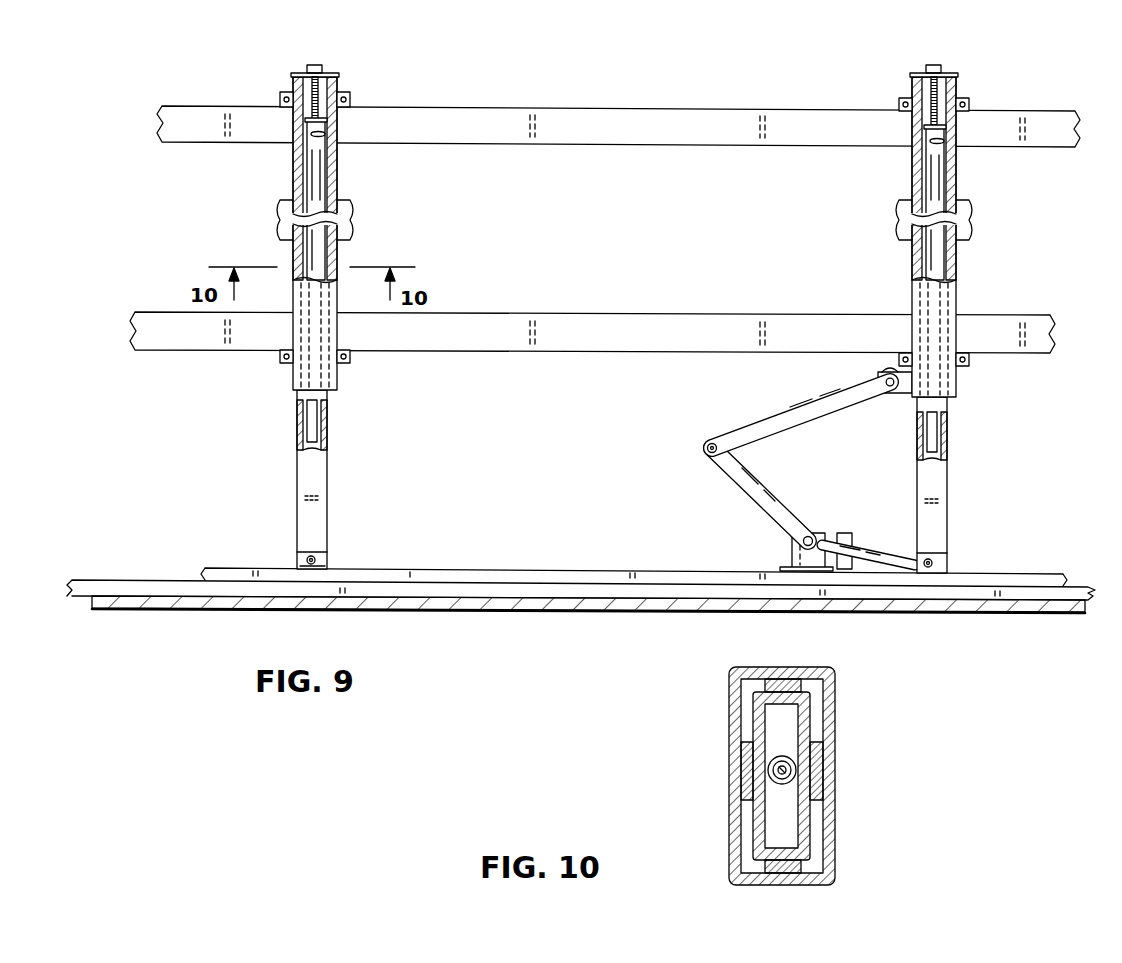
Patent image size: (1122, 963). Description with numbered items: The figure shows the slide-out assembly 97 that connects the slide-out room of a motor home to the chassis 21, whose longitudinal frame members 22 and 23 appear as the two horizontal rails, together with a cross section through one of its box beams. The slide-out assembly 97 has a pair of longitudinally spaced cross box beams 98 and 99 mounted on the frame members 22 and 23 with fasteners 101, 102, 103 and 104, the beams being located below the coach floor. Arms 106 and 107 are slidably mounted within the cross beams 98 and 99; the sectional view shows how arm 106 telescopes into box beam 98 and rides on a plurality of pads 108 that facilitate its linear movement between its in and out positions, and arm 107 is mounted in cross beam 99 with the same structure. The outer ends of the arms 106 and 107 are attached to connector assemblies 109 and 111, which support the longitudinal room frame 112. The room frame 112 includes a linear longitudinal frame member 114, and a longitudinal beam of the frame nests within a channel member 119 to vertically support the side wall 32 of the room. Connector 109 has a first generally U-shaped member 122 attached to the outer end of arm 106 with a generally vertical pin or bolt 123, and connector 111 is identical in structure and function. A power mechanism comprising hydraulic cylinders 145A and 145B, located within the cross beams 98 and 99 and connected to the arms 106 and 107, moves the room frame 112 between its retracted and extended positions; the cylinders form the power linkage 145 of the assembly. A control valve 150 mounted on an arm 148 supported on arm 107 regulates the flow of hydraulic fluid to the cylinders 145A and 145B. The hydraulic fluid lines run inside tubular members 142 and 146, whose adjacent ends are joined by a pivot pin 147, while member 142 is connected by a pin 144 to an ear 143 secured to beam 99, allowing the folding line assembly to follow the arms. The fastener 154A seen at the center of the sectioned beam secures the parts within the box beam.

In FIG. 9, the chassis 21 is at (1048, 104).
In FIG. 9, the longitudinal frame member 22 is at (1013, 138).
In FIG. 9, the longitudinal frame member 23 is at (1008, 326).
In FIG. 9, the side wall 32 is at (630, 603).
In FIG. 9, the slide-out assembly 97 is at (1000, 410).
In FIG. 9, the cross box beam 98 is at (340, 166).
In FIG. 10, the cross box beam 98 is at (831, 712).
In FIG. 9, the cross box beam 99 is at (917, 156).
In FIG. 9, the fastener 101 is at (349, 92).
In FIG. 9, the fastener 102 is at (350, 362).
In FIG. 9, the fastener 103 is at (968, 96).
In FIG. 9, the fastener 104 is at (968, 366).
In FIG. 9, the arm 106 is at (316, 454).
In FIG. 10, the arm 106 is at (806, 840).
In FIG. 9, the arm 107 is at (935, 470).
In FIG. 10, the pad 108 is at (785, 684).
In FIG. 9, the connector assembly 109 is at (290, 550).
In FIG. 9, the connector assembly 111 is at (950, 547).
In FIG. 9, the room frame 112 is at (592, 560).
In FIG. 9, the longitudinal frame member 114 is at (1015, 586).
In FIG. 9, the channel member 119 is at (1028, 596).
In FIG. 9, the U-shaped member 122 is at (327, 562).
In FIG. 9, the pin or bolt 123 is at (326, 553).
In FIG. 9, the tubular member 142 is at (772, 427).
In FIG. 9, the ear 143 is at (897, 394).
In FIG. 9, the pin 144 is at (888, 376).
In FIG. 9, the folding linkage 145 is at (748, 407).
In FIG. 9, the hydraulic cylinder 145A is at (316, 160).
In FIG. 9, the hydraulic cylinder 145B is at (938, 170).
In FIG. 9, the tubular member 146 is at (756, 505).
In FIG. 9, the pivot pin 147 is at (703, 450).
In FIG. 9, the arm 148 is at (812, 556).
In FIG. 9, the control valve 150 is at (848, 568).
In FIG. 10, the fastener 154A is at (778, 782).